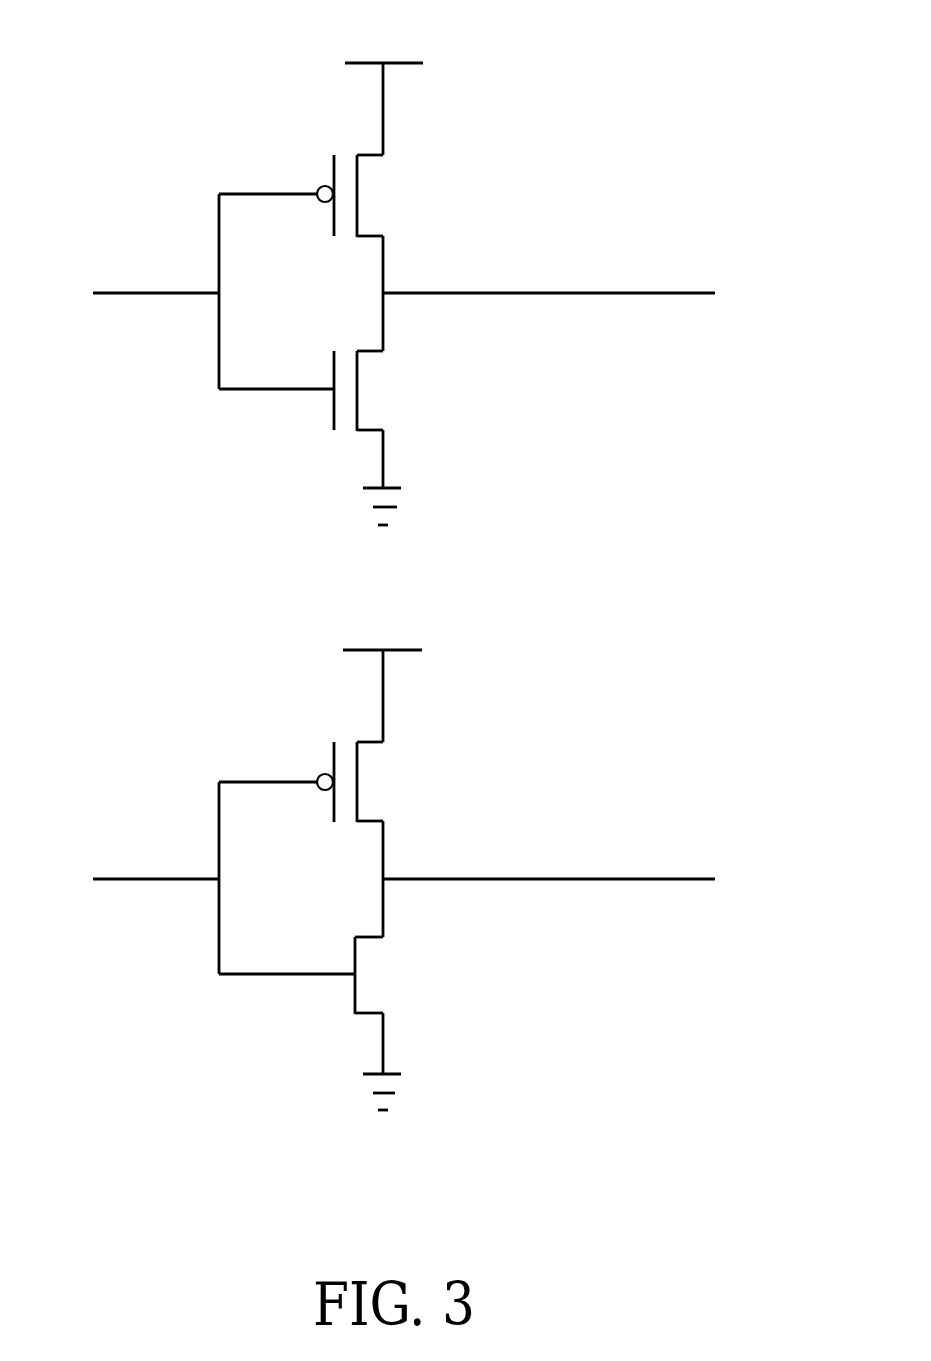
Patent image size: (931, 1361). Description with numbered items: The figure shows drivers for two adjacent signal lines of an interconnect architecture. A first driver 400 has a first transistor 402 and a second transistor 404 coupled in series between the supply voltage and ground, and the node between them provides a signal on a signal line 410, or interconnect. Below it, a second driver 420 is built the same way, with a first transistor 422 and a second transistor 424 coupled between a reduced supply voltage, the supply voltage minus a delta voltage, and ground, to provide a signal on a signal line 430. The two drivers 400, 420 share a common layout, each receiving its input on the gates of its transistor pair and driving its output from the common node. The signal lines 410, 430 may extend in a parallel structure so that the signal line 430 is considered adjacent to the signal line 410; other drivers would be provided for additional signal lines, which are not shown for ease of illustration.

The first driver 400 is at (423, 262).
The first transistor 402 is at (428, 195).
The second transistor 404 is at (428, 391).
The signal line 410 is at (663, 293).
The second driver 420 is at (423, 846).
The first transistor 422 is at (428, 782).
The second transistor 424 is at (428, 975).
The signal line 430 is at (663, 879).